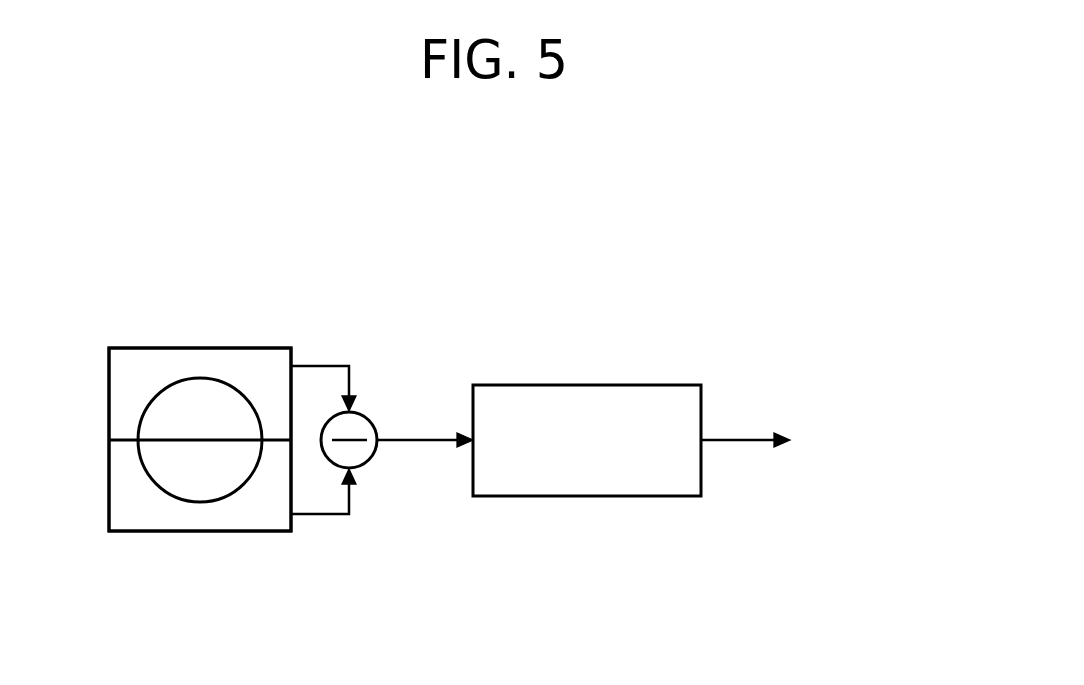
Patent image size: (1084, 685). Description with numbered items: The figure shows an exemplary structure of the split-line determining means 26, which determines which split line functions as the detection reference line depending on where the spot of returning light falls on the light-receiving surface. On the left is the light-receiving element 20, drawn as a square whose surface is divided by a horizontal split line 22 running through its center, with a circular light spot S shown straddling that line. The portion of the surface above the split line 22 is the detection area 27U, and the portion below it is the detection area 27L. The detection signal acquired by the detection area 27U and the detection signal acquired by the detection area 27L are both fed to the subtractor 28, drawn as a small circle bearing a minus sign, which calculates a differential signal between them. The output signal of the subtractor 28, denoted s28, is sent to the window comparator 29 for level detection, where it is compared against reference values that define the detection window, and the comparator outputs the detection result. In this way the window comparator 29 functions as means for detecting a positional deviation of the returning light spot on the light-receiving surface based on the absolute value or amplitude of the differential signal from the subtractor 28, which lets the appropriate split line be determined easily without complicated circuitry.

The optical sensor / light receiving element 20 is at (162, 347).
The split line 22 is at (122, 438).
The split-line determining means 26 is at (662, 310).
The detection area 27U is at (263, 368).
The detection area 27L is at (255, 515).
The subtractor 28 is at (370, 467).
The output signal of the subtractor s28 is at (425, 416).
The window comparator 29 is at (548, 495).
The dividing line / split S is at (162, 488).